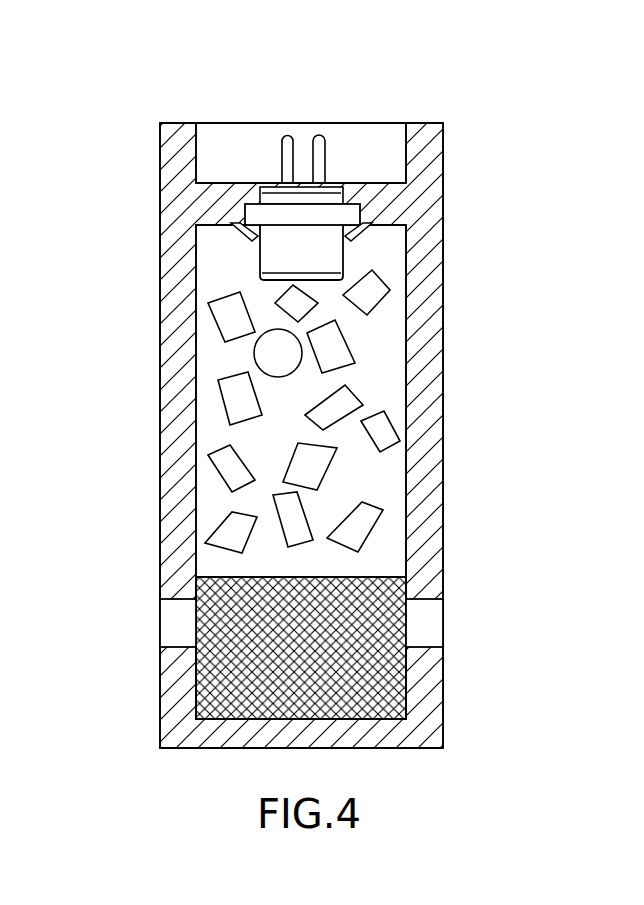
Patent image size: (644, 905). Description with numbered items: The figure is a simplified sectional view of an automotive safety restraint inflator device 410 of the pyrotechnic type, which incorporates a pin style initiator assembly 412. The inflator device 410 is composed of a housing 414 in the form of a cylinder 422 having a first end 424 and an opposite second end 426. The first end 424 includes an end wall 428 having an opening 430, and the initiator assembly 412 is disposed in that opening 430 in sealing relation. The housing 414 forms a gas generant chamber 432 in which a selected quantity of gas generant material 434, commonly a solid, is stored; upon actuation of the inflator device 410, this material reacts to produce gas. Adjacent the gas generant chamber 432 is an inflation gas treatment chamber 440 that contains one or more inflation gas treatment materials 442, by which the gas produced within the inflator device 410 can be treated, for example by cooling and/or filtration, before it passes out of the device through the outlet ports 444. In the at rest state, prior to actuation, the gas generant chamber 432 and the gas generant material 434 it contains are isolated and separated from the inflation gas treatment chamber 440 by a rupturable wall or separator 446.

The automotive safety restraint inflator device 410 is at (525, 175).
The initiator assembly 412 is at (293, 262).
The housing 414 is at (445, 440).
The cylinder 422 is at (160, 520).
The first end 424 is at (128, 108).
The second end 426 is at (453, 755).
The end wall 428 is at (373, 190).
The opening 430 is at (243, 218).
The gas generant chamber 432 is at (232, 358).
The gas generant material 434 is at (337, 350).
The inflation gas treatment chamber 440 is at (197, 677).
The inflation gas treatment materials 442 is at (243, 698).
The outlet ports 444 is at (160, 622).
The rupturable wall or separator 446 is at (380, 578).